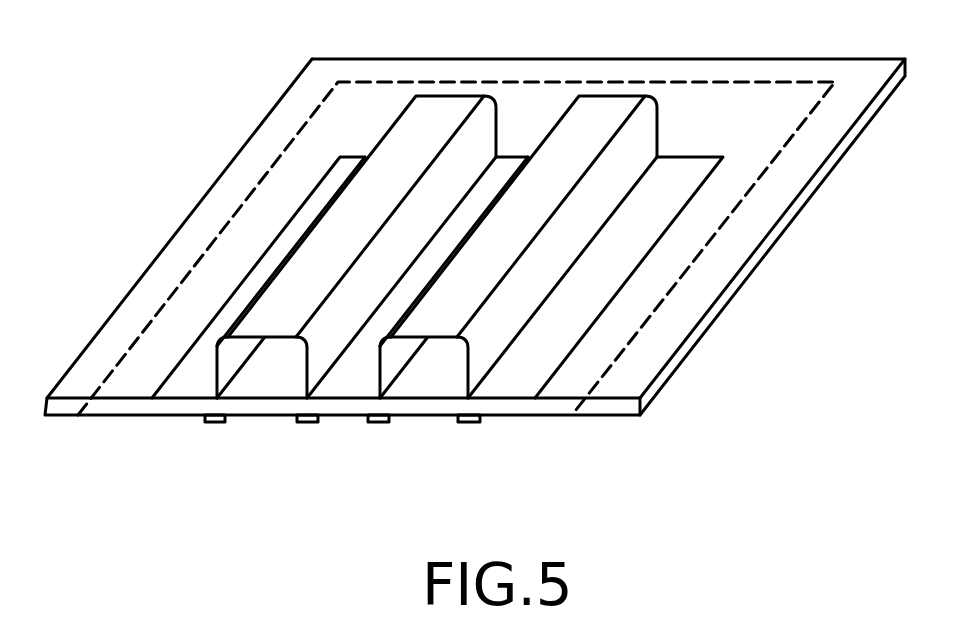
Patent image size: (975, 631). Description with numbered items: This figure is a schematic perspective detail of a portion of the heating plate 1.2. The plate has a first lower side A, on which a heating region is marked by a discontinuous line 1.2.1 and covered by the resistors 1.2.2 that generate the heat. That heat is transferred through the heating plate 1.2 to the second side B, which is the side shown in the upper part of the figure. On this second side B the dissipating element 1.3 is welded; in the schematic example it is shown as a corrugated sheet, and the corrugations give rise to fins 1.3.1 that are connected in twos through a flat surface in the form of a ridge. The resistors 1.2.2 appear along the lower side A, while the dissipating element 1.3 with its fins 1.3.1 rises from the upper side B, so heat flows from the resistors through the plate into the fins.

The heating plate 1.2 is at (662, 333).
The mounting region outline 1.2.1 is at (700, 82).
The resistors 1.2.2 is at (222, 422).
The dissipating element 1.3 is at (202, 367).
The fins 1.3.1 is at (488, 128).
The first lower side A is at (518, 415).
The second side B is at (305, 97).